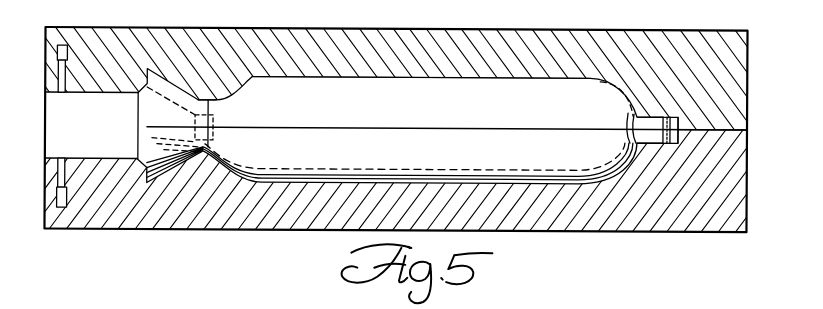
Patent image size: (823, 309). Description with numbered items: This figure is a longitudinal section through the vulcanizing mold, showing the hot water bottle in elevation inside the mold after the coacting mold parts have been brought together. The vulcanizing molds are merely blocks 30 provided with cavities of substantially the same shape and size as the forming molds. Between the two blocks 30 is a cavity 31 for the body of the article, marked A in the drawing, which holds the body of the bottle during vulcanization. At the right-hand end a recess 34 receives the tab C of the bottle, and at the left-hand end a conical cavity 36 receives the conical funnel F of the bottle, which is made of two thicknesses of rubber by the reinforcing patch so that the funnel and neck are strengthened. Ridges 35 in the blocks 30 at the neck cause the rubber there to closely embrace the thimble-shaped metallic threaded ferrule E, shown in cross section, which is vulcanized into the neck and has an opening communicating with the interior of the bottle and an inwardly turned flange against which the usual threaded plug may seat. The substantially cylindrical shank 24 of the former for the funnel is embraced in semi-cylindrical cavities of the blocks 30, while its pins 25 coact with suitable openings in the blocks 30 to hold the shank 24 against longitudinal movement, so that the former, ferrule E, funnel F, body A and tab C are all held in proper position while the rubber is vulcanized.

The cylindrical shank 24 is at (110, 125).
The pin 25 is at (15, 193).
The vulcanizing mold blocks 30 is at (740, 168).
The cavity for the body of the article 31 is at (558, 181).
The recess for the tab 34 is at (667, 144).
The ridges 35 is at (213, 156).
The conical cavity 36 is at (183, 168).
The mold cavity A is at (421, 121).
The tab C is at (653, 115).
The threaded ferrule E is at (210, 136).
The funnel F is at (216, 98).